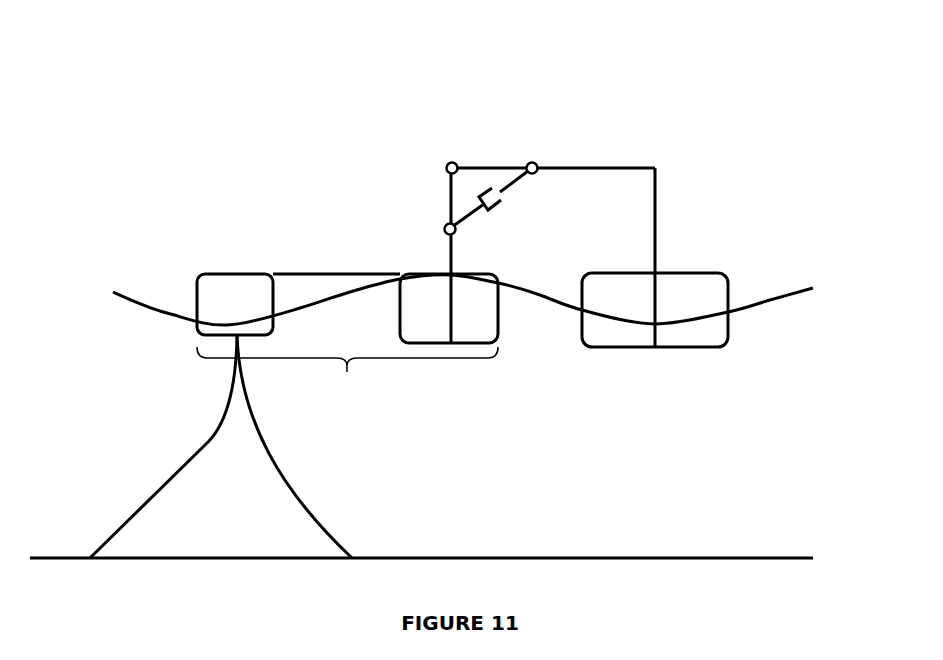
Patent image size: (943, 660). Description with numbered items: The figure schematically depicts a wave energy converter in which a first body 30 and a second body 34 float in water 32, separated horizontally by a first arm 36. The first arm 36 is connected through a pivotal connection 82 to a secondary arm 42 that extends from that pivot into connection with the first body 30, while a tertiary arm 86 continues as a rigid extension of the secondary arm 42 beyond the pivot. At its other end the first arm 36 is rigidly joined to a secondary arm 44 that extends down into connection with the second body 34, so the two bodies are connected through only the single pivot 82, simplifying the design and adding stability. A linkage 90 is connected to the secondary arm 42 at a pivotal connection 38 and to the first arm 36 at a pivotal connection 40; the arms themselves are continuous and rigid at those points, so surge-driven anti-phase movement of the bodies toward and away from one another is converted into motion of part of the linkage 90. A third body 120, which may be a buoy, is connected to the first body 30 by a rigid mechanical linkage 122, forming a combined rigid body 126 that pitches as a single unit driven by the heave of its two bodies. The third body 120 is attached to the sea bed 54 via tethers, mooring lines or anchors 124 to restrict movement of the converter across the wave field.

The first body 30 is at (413, 302).
The water 32 is at (787, 303).
The second body 34 is at (588, 340).
The first arm 36 is at (605, 165).
The pivotal connection 38 is at (443, 227).
The pivotal connection 40 is at (530, 160).
The secondary arm 42 is at (450, 265).
The secondary arm 44 is at (658, 255).
The sea bed 54 is at (72, 557).
The pivotal connection 82 is at (452, 160).
The tertiary arm 86 is at (447, 190).
The linkage 90 is at (507, 212).
The third body 120 is at (228, 285).
The rigid mechanical linkage 122 is at (293, 272).
The tethers, mooring lines and/or anchors 124 is at (212, 445).
The combined rigid body 126 is at (347, 375).